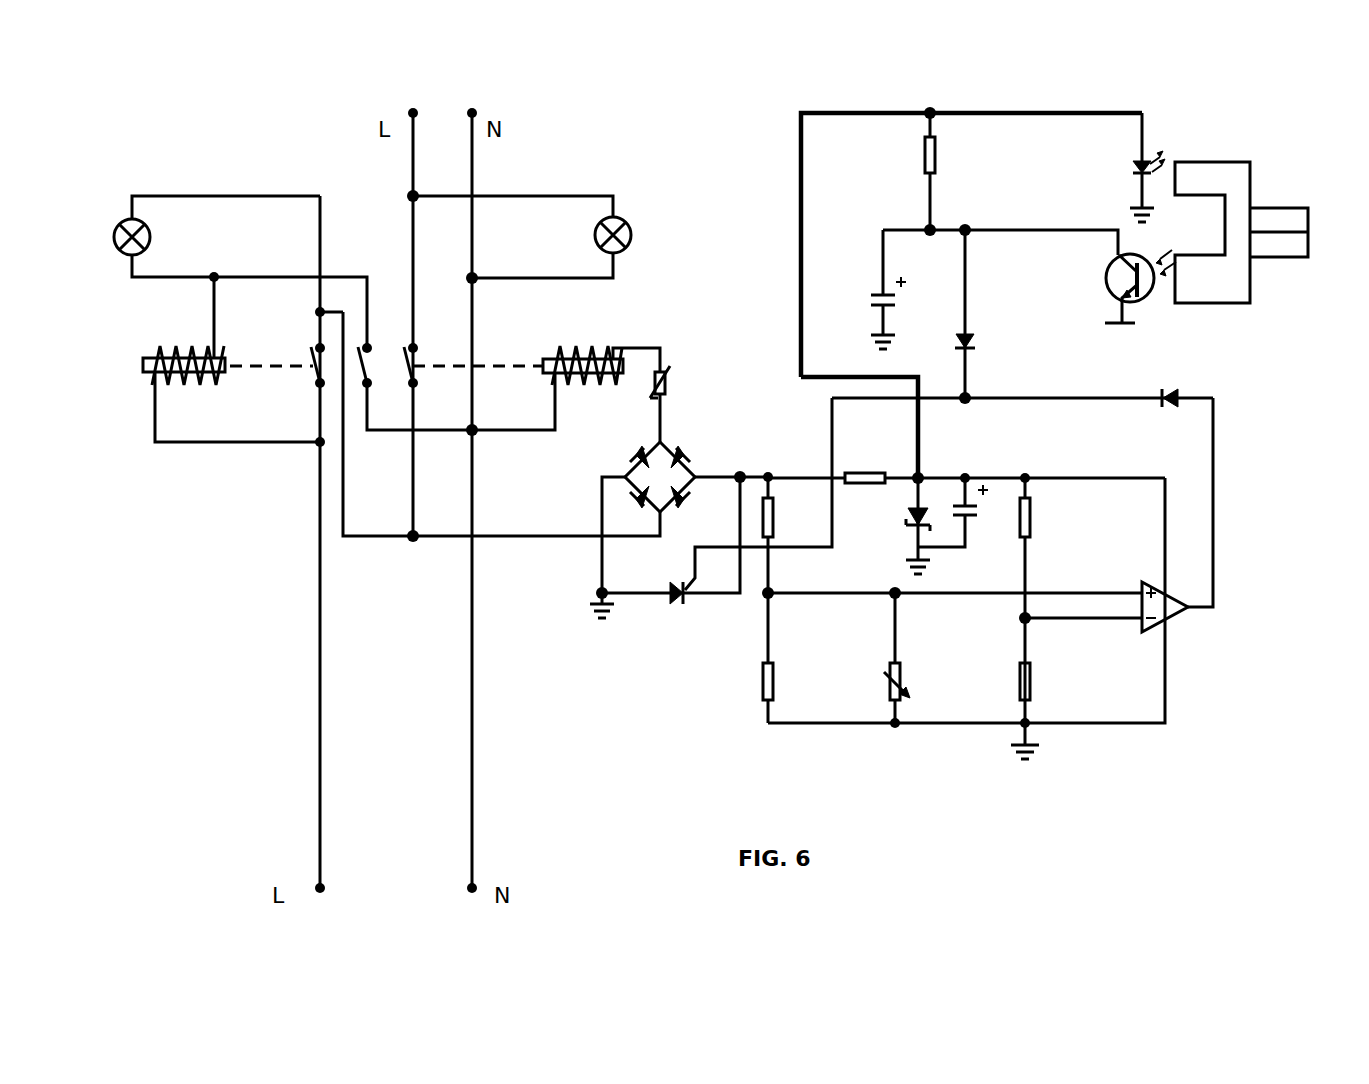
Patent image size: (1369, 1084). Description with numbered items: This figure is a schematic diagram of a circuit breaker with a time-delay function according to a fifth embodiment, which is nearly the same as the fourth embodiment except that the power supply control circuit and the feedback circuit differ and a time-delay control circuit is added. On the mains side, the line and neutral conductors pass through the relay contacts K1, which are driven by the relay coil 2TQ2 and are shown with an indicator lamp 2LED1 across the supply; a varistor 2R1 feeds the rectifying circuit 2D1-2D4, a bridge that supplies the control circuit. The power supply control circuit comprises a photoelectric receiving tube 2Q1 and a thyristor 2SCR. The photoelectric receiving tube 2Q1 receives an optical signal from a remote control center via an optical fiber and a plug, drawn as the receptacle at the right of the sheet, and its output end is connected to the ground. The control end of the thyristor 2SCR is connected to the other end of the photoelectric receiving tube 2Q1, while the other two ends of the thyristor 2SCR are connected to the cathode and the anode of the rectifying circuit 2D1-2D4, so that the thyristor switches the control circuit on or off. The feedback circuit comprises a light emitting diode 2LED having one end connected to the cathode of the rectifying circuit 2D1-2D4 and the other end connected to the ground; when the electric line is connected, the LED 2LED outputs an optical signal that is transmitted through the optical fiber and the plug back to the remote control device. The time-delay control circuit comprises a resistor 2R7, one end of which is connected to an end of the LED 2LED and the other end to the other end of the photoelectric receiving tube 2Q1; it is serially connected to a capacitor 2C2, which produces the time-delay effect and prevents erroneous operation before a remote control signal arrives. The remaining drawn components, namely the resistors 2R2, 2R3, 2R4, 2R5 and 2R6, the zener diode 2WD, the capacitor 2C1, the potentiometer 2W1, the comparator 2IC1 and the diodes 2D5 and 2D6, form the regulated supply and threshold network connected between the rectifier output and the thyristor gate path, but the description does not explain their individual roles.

The relay switch contacts K1 is at (473, 353).
The indicator lamp 2LED1 is at (567, 237).
The relay coil 2TQ2 is at (595, 349).
The varistor 2R1 is at (679, 404).
The rectifying circuit 2D1-2D4 is at (597, 507).
The thyristor 2SCR is at (717, 527).
The resistor 2R5 is at (794, 535).
The resistor 2R2 is at (966, 460).
The zener diode 2WD is at (887, 526).
The capacitor 2C1 is at (968, 512).
The resistor 2R3 is at (1052, 535).
The resistor 2R6 is at (796, 658).
The potentiometer 2W1 is at (923, 658).
The resistor 2R4 is at (1048, 711).
The comparator 2IC1 is at (1180, 526).
The diode 2D6 is at (1022, 383).
The resistor 2R7 is at (955, 171).
The capacitor 2C2 is at (862, 289).
The diode 2D5 is at (992, 314).
The light emitting diode (LED) 2LED is at (1111, 167).
The photoelectric receiving tube 2Q1 is at (1114, 286).